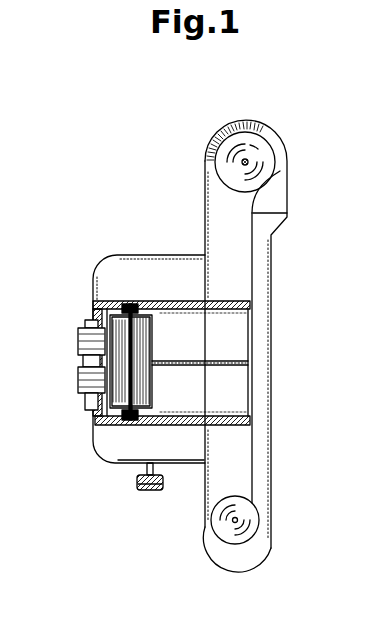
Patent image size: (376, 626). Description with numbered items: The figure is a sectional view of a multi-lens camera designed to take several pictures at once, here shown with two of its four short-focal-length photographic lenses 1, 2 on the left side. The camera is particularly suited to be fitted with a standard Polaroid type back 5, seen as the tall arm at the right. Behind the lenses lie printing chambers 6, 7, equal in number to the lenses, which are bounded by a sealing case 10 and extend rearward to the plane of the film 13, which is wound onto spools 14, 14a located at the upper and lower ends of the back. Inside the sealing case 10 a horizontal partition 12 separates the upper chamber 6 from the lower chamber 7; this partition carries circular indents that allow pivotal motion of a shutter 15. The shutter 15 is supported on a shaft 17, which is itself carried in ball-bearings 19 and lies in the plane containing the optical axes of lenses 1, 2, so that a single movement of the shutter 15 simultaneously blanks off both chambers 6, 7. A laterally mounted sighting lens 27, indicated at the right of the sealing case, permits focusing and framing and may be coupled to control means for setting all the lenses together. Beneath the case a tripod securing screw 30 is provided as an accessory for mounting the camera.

The photographic lens 1 is at (92, 340).
The photographic lens 2 is at (80, 386).
The standard Polaroid type back 5 is at (265, 267).
The printing chamber 6 is at (232, 336).
The printing chamber 7 is at (226, 403).
The sealing case 10 is at (182, 300).
The horizontal partition 12 is at (236, 361).
The film 13 is at (254, 213).
The spool 14 is at (258, 147).
The spool 14a is at (243, 527).
The shutter 15 is at (140, 383).
The shaft 17 is at (133, 338).
The ball-bearing 19 is at (130, 302).
The sighting lens 27 is at (375, 374).
The tripod securing screw 30 is at (138, 484).